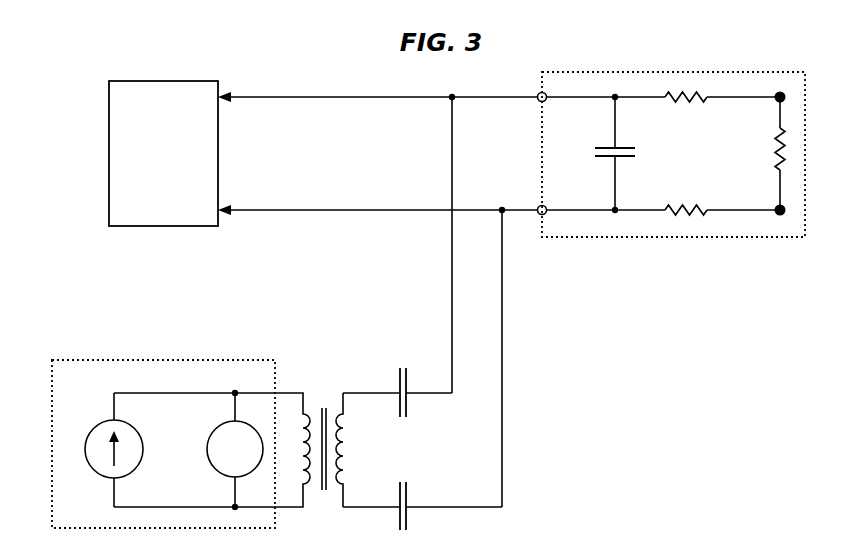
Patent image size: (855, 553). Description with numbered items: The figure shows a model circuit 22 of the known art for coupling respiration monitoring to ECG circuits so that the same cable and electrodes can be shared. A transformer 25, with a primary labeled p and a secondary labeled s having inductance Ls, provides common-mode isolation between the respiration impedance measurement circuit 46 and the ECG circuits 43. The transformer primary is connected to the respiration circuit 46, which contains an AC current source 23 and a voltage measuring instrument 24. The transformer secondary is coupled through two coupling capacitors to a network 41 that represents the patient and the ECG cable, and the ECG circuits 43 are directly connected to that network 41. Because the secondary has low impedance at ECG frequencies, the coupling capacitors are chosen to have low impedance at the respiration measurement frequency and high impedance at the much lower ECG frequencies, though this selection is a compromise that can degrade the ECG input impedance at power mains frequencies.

The circuit 22 is at (607, 372).
The AC current source 23 is at (89, 434).
The voltage measuring instrument 24 is at (208, 459).
The transformer 25 is at (322, 400).
The network 41 is at (602, 237).
The ECG circuits 43 is at (175, 226).
The respiration impedance measurement circuit 46 is at (163, 410).